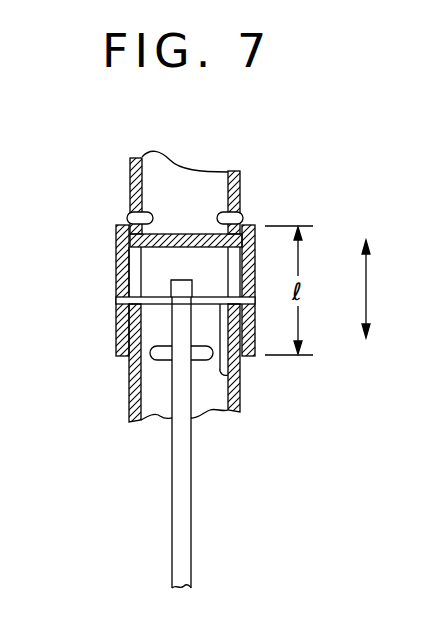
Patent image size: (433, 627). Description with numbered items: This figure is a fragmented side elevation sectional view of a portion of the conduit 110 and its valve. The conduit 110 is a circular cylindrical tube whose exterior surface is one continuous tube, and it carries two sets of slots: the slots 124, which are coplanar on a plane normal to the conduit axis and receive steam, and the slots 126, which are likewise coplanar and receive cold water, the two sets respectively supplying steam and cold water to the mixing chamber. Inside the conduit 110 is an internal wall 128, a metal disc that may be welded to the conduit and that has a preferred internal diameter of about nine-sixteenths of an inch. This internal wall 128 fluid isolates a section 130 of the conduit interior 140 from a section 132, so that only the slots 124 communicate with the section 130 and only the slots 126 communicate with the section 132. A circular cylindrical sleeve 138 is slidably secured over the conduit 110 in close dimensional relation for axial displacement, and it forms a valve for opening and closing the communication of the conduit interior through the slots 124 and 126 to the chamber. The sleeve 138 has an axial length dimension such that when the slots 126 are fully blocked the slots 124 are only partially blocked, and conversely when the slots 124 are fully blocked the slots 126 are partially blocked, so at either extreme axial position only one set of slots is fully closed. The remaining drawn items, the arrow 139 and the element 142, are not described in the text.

The conduit 110 is at (241, 181).
The slots 124 is at (129, 220).
The slots 126 is at (155, 357).
The internal wall 128 is at (152, 248).
The section 130 is at (163, 218).
The section 132 is at (168, 266).
The sleeve 138 is at (117, 320).
The stroke direction 139 is at (368, 302).
The interior 140 is at (230, 184).
The stop pin 142 is at (226, 368).